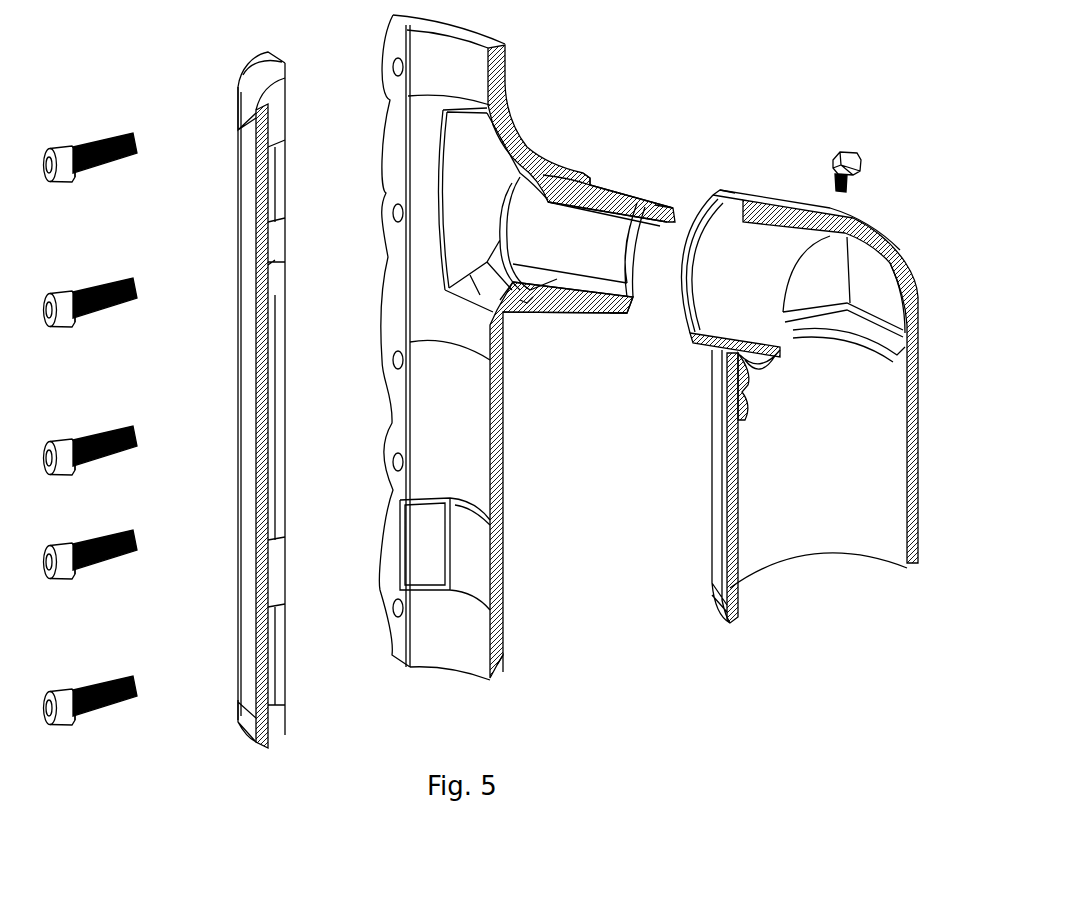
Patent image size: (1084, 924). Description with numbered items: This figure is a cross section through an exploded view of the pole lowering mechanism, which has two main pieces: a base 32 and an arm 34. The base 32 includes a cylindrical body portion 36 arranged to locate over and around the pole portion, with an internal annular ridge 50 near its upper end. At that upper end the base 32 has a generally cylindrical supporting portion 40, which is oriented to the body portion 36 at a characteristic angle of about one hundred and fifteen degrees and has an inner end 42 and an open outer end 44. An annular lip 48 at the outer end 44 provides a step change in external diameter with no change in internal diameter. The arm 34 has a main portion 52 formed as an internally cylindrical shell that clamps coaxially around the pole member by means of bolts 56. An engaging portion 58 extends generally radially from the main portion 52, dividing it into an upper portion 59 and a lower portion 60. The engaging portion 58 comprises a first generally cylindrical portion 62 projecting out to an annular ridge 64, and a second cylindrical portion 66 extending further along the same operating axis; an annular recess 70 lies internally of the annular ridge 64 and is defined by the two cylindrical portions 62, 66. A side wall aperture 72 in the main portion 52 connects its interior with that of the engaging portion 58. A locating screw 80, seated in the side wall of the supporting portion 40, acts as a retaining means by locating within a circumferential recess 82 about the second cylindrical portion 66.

The base 32 is at (807, 374).
The arm 34 is at (503, 368).
The body portion 36 is at (717, 530).
The supporting portion 40 is at (777, 205).
The inner end 42 is at (880, 292).
The outer end 44 is at (712, 247).
The annular lip 48 is at (688, 338).
The internal annular ridge 50 is at (885, 340).
The main portion 52 is at (500, 667).
The bolts 56 is at (115, 165).
The engaging portion 58 is at (543, 167).
The upper portion 59 is at (505, 63).
The lower portion 60 is at (393, 588).
The first generally cylindrical portion 62 is at (557, 168).
The annular ridge 64 is at (585, 178).
The second cylindrical portion 66 is at (590, 308).
The annular recess 70 is at (577, 185).
The side wall aperture 72 is at (503, 233).
The locating screw 80 is at (858, 176).
The circumferential recess 82 is at (607, 313).